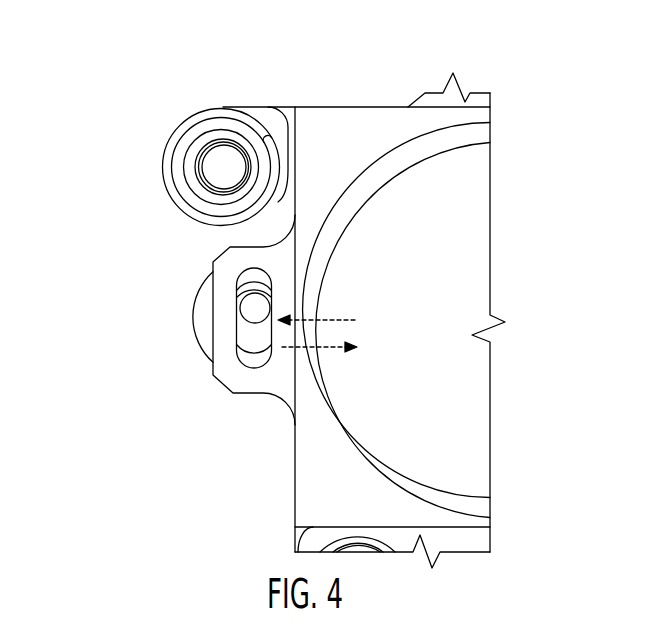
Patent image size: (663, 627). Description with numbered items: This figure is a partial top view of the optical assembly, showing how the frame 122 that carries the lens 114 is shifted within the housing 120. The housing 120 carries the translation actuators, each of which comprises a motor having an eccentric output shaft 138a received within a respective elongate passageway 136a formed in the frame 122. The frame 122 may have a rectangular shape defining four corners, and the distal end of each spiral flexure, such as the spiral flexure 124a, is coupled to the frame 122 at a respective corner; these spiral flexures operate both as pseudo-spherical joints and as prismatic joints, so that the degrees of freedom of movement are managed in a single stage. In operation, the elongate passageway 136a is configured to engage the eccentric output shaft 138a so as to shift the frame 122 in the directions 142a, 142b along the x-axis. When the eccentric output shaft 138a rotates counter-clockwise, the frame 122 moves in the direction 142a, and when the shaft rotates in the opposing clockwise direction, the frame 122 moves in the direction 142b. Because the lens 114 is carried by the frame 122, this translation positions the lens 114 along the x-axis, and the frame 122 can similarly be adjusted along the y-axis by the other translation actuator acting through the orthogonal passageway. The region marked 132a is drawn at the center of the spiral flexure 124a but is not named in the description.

The lens 114 is at (457, 378).
The housing 120 is at (166, 290).
The frame 122 is at (443, 117).
The spiral flexure 124a is at (190, 109).
The fastener opening 132a is at (218, 163).
The elongate passageway 136a is at (250, 364).
The eccentric output shaft 138a is at (252, 308).
The direction 142a is at (318, 328).
The direction 142b is at (328, 362).